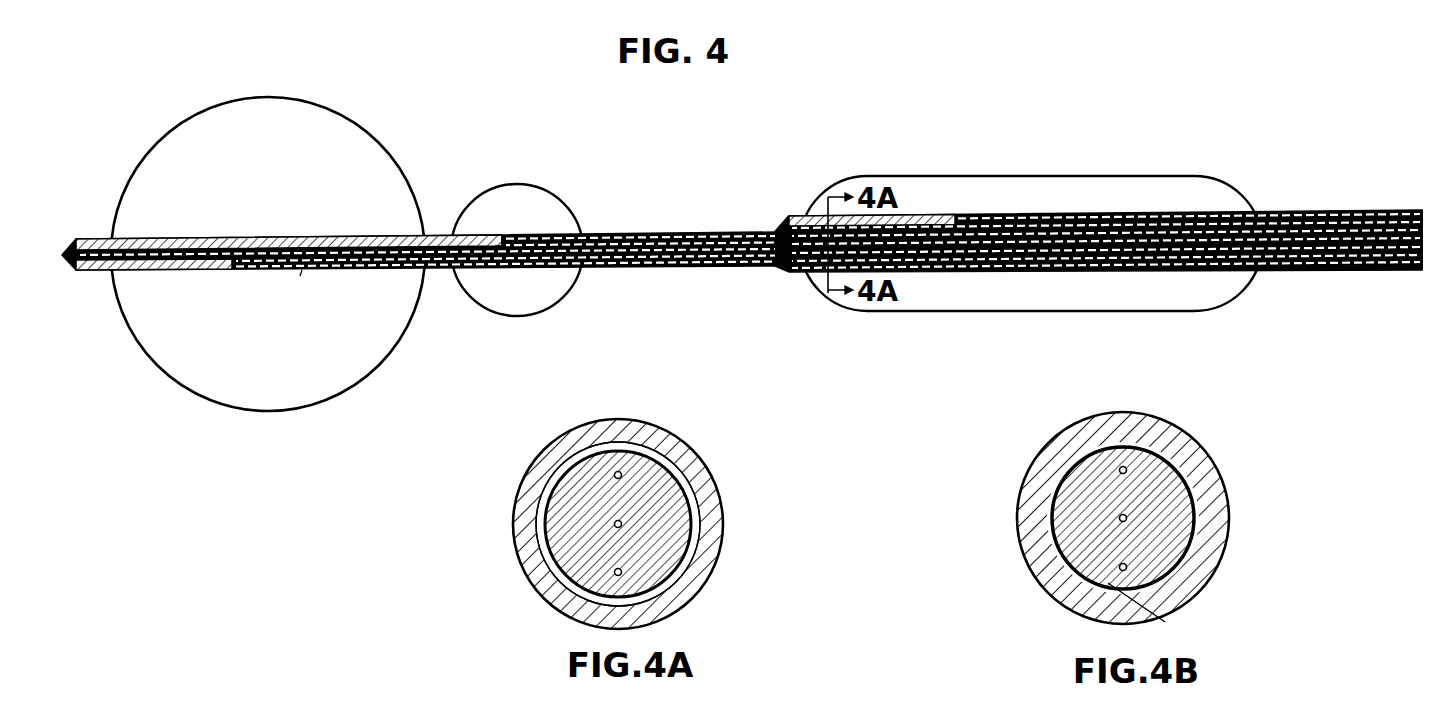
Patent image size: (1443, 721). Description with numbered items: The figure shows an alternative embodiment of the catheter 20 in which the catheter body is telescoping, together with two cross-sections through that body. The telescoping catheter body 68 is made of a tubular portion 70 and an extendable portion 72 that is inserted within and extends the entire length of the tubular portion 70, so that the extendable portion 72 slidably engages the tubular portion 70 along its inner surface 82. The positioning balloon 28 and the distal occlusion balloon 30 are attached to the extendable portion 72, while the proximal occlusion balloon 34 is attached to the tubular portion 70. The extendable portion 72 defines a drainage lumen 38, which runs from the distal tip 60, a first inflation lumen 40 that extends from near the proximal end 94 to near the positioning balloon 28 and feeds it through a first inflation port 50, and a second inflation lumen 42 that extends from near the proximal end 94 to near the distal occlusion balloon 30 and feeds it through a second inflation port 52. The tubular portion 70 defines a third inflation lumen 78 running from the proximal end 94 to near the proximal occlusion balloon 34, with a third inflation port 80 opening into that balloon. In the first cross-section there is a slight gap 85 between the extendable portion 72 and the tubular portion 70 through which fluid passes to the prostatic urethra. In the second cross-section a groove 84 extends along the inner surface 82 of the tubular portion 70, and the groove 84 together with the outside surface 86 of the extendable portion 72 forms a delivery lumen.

In FIG. 4, the catheter 20 is at (1371, 295).
In FIG. 4, the positioning balloon 28 is at (306, 411).
In FIG. 4, the distal occlusion balloon 30 is at (497, 306).
In FIG. 4, the proximal occlusion balloon 34 is at (906, 312).
In FIG. 4, the drainage lumen 38 is at (94, 272).
In FIG. 4A, the drainage lumen 38 is at (621, 523).
In FIG. 4B, the drainage lumen 38 is at (1126, 517).
In FIG. 4, the first inflation lumen 40 is at (300, 276).
In FIG. 4A, the first inflation lumen 40 is at (621, 573).
In FIG. 4B, the first inflation lumen 40 is at (1121, 569).
In FIG. 4, the second inflation lumen 42 is at (636, 234).
In FIG. 4A, the second inflation lumen 42 is at (621, 474).
In FIG. 4B, the second inflation lumen 42 is at (1119, 467).
In FIG. 4, the first inflation port 50 is at (234, 270).
In FIG. 4, the second inflation port 52 is at (505, 238).
In FIG. 4, the distal tip 60 is at (80, 241).
In FIG. 4, the telescoping catheter body 68 is at (718, 268).
In FIG. 4, the tubular portion 70 is at (797, 275).
In FIG. 4A, the tubular portion 70 is at (541, 590).
In FIG. 4B, the tubular portion 70 is at (1036, 565).
In FIG. 4, the extendable portion 72 is at (656, 268).
In FIG. 4A, the extendable portion 72 is at (578, 504).
In FIG. 4B, the extendable portion 72 is at (1163, 553).
In FIG. 4, the third inflation lumen 78 is at (1138, 217).
In FIG. 4, the third inflation port 80 is at (960, 222).
In FIG. 4, the inner surface 82 is at (784, 224).
In FIG. 4B, the groove 84 is at (1153, 615).
In FIG. 4A, the gap 85 is at (619, 598).
In FIG. 4, the outside surface 86 is at (610, 268).
In FIG. 4, the proximal end 94 is at (1426, 225).